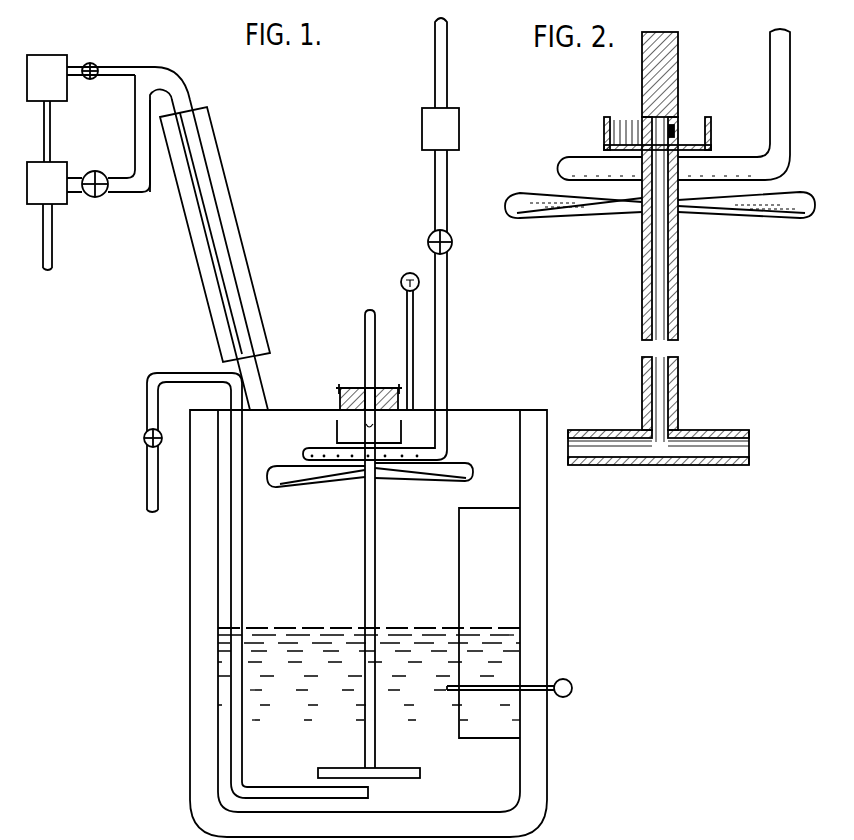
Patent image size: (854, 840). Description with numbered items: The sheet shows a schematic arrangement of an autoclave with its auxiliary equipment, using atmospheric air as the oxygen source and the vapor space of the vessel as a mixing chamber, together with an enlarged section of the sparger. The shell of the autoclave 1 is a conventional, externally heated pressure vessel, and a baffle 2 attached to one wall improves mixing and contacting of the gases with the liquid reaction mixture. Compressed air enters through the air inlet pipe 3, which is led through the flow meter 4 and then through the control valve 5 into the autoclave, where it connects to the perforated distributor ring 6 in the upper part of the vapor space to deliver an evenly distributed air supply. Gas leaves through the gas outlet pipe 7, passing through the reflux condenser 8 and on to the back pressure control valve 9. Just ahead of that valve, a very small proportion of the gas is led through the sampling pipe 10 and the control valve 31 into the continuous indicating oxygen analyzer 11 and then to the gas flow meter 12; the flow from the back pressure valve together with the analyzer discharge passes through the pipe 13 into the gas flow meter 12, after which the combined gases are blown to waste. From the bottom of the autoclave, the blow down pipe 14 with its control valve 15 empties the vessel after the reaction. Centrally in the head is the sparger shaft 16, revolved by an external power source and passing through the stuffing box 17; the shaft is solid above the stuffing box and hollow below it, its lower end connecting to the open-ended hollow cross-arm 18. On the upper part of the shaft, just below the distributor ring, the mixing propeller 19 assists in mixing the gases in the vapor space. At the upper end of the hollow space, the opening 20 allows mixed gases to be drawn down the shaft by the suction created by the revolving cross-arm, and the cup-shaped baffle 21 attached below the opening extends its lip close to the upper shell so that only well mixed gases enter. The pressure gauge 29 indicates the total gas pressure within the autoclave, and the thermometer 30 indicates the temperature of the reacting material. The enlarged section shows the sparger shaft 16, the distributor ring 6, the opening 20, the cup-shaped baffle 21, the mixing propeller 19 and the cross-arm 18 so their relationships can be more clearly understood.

In FIG. 1, the shell of the autoclave 1 is at (522, 770).
In FIG. 1, the baffle 2 is at (462, 560).
In FIG. 1, the air inlet pipe 3 is at (436, 63).
In FIG. 1, the flow meter 4 is at (432, 128).
In FIG. 1, the control valve 5 is at (429, 236).
In FIG. 1, the perforated distributor ring 6 is at (445, 400).
In FIG. 2, the perforated distributor ring 6 is at (770, 64).
In FIG. 1, the gas outlet pipe 7 is at (257, 378).
In FIG. 1, the reflux condenser 8 is at (245, 238).
In FIG. 1, the back pressure control valve 9 is at (107, 172).
In FIG. 1, the sampling pipe 10 is at (122, 68).
In FIG. 1, the continuous indicating oxygen analyzer 11 is at (48, 65).
In FIG. 1, the gas flow meter 12 is at (55, 196).
In FIG. 1, the pipe 13 is at (135, 125).
In FIG. 1, the blow down pipe 14 is at (277, 793).
In FIG. 1, the control valve 15 is at (143, 437).
In FIG. 1, the sparger shaft 16 is at (363, 328).
In FIG. 2, the sparger shaft 16 is at (642, 72).
In FIG. 1, the stuffing box 17 is at (352, 388).
In FIG. 1, the open-ended hollow cross-arm 18 is at (398, 770).
In FIG. 2, the open-ended hollow cross-arm 18 is at (698, 447).
In FIG. 1, the mixing propeller 19 is at (307, 479).
In FIG. 2, the mixing propeller 19 is at (776, 195).
In FIG. 1, the opening 20 is at (378, 426).
In FIG. 2, the opening 20 is at (676, 130).
In FIG. 1, the cup-shaped baffle 21 is at (337, 430).
In FIG. 2, the cup-shaped baffle 21 is at (604, 134).
In FIG. 1, the pressure gauge 29 is at (405, 275).
In FIG. 1, the thermometer 30 is at (557, 681).
In FIG. 1, the control valve 31 is at (89, 63).